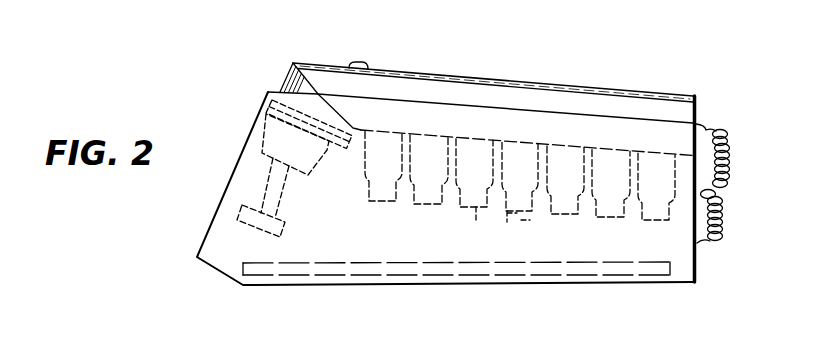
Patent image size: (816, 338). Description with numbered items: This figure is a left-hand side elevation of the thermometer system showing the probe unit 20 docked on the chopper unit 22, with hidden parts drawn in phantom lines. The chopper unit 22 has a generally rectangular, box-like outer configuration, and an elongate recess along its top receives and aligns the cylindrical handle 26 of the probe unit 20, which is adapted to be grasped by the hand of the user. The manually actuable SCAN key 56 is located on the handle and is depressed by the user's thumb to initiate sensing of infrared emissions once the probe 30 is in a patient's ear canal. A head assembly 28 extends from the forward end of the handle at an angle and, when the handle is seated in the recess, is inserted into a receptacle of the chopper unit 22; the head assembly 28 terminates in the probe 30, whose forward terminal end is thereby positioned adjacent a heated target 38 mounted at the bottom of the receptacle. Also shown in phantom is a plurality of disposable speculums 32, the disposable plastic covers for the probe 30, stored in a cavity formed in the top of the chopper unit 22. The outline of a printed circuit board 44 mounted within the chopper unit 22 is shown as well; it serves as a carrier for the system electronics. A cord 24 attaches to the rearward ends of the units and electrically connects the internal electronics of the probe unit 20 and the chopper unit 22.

The probe unit 20 is at (277, 75).
The chopper unit 22 is at (190, 234).
The cord 24 is at (713, 243).
The cylindrical handle 26 is at (527, 81).
The head assembly 28 is at (273, 133).
The probe 30 is at (266, 188).
The disposable speculum 32 is at (526, 222).
The heated target 38 is at (240, 212).
The printed circuit board 44 is at (455, 288).
The SCAN key 56 is at (361, 62).